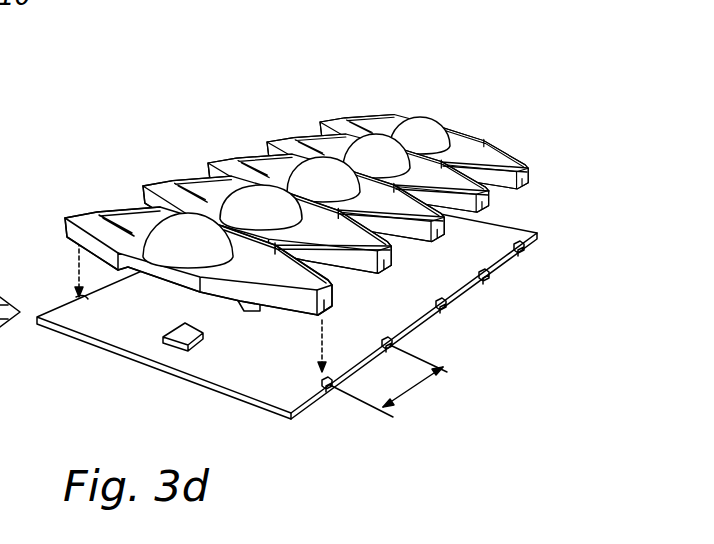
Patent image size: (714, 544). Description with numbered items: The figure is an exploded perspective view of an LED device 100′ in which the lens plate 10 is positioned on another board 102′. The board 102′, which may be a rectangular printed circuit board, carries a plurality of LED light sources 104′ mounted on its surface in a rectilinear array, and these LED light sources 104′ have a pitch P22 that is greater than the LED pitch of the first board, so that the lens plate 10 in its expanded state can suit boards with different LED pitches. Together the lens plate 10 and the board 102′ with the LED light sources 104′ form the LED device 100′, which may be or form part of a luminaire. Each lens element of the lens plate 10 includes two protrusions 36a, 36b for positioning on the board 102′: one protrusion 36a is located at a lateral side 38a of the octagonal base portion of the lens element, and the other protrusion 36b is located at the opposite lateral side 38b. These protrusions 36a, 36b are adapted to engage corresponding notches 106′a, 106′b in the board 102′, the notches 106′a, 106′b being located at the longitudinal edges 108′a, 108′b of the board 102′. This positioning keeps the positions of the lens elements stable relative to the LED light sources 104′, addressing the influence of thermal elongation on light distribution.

The LED device 100′ is at (270, 192).
The lens plate 10 is at (474, 146).
The lateral side 38b is at (78, 217).
The protrusion 36b is at (68, 234).
The longitudinal edge 108′b is at (62, 311).
The notch 106′b is at (80, 298).
The LED light source 104′ is at (244, 305).
The board 102′ is at (486, 293).
The lateral side 38a is at (322, 301).
The protrusion 36a is at (326, 312).
The longitudinal edge 108′a is at (400, 297).
The notch 106′a is at (340, 393).
The LED pitch P22 is at (391, 384).